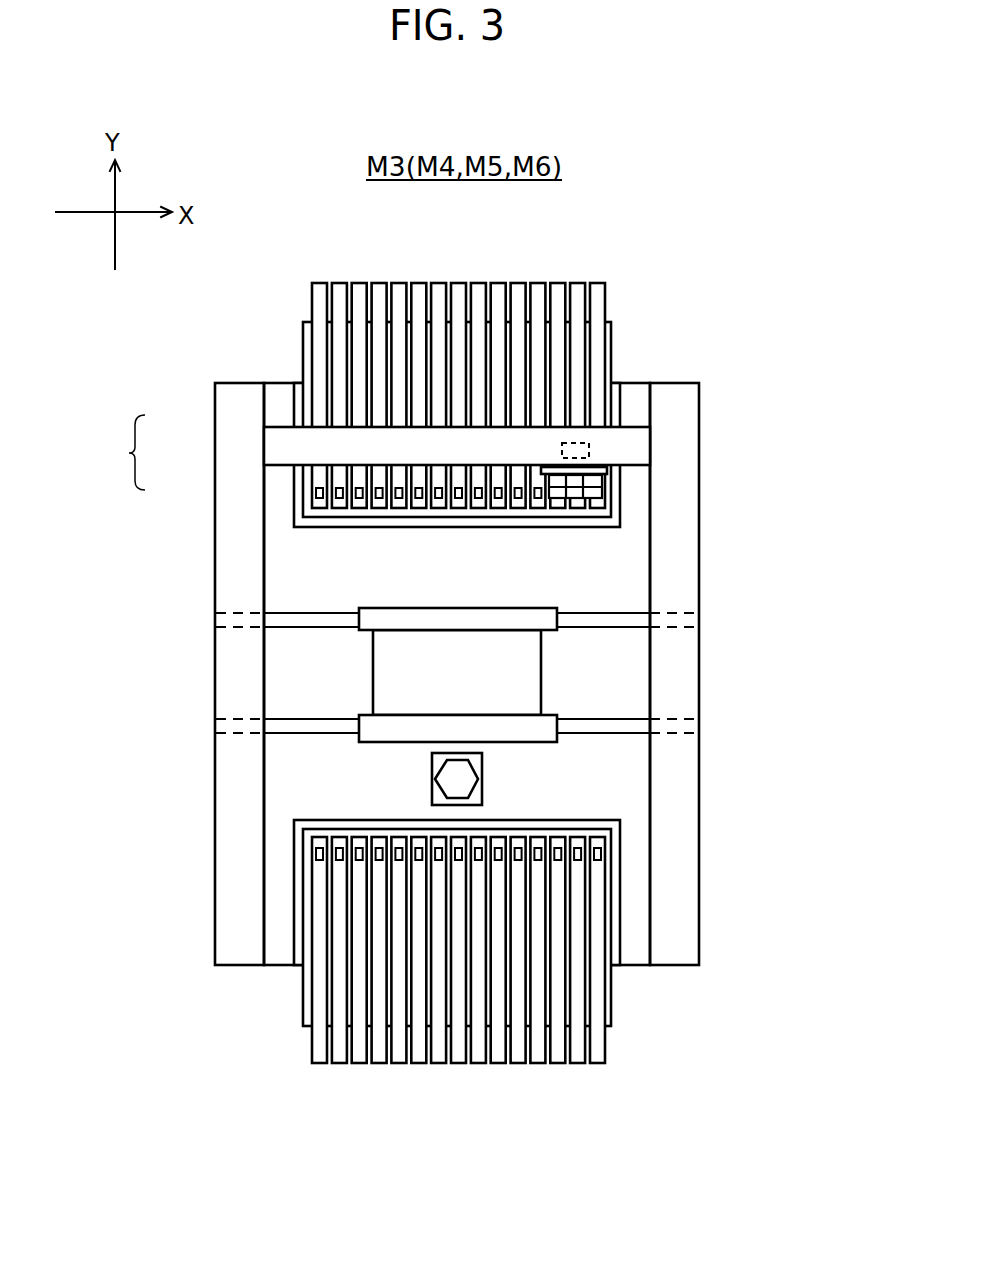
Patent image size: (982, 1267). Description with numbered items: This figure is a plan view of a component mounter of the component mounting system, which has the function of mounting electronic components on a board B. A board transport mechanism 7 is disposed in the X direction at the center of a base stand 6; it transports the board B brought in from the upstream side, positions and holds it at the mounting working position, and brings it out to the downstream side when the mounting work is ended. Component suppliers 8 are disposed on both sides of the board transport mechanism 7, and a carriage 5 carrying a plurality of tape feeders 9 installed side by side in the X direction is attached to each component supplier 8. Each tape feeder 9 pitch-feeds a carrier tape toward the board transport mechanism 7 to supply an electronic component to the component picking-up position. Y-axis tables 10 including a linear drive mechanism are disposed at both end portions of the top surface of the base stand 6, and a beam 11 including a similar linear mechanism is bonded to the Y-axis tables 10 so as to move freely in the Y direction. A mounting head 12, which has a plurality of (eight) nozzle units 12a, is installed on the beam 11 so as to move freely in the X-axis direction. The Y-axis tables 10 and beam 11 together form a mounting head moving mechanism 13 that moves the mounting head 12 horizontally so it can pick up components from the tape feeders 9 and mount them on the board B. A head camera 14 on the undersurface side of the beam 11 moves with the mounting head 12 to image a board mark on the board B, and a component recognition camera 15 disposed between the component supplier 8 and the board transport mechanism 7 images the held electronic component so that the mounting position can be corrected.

The carriage 5 is at (605, 343).
The base stand 6 is at (290, 585).
The board transport mechanism 7 is at (623, 618).
The component supplier 8 is at (472, 678).
The tape feeder 9 is at (555, 293).
The Y-axis table 10 is at (233, 488).
The beam 11 is at (280, 447).
The mounting head 12 is at (614, 471).
The nozzle unit 12a is at (580, 493).
The mounting head moving mechanism 13 is at (448, 678).
The head camera 14 is at (590, 450).
The component recognition camera 15 is at (457, 778).
The board B is at (399, 673).